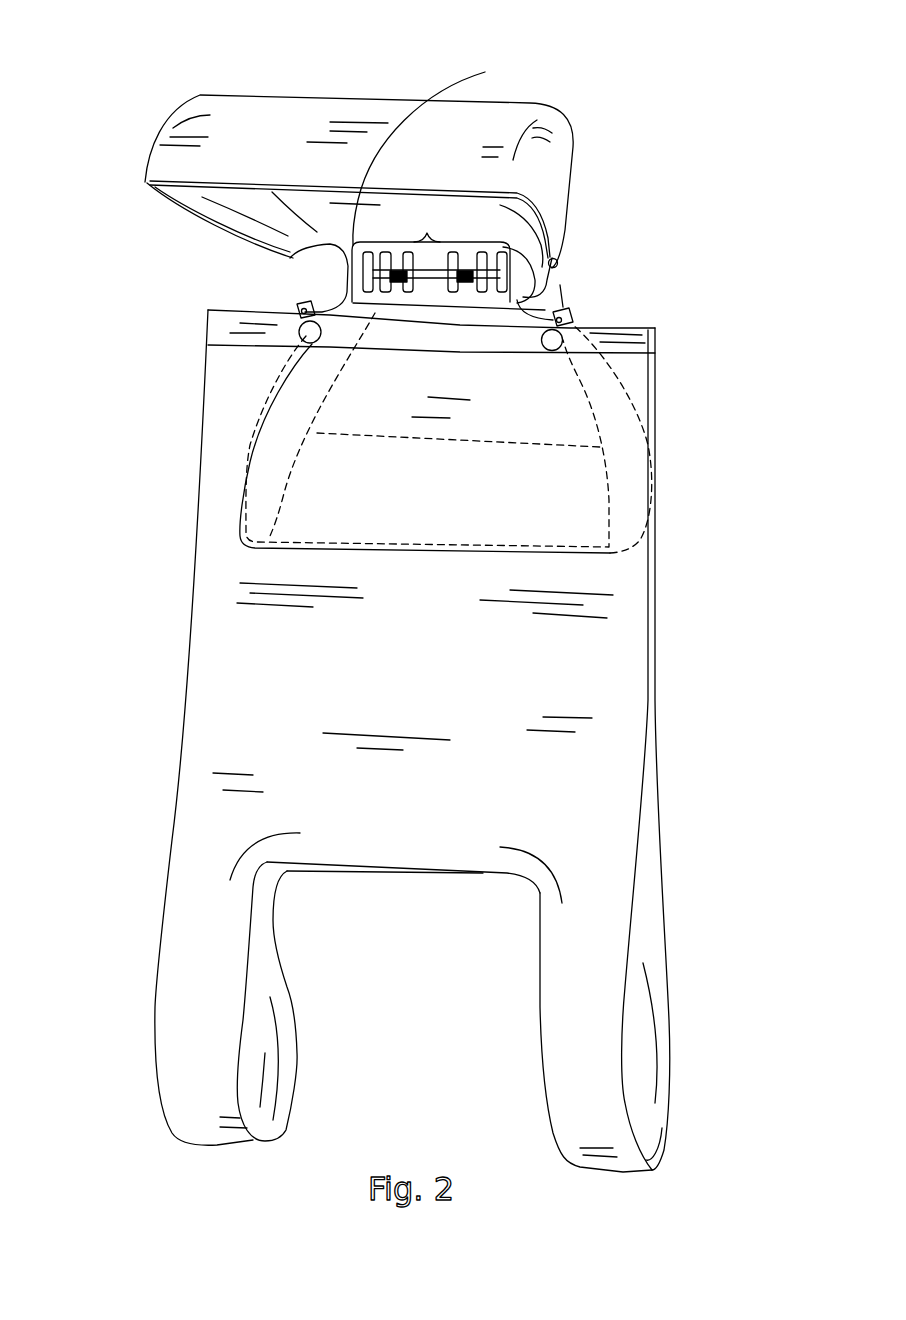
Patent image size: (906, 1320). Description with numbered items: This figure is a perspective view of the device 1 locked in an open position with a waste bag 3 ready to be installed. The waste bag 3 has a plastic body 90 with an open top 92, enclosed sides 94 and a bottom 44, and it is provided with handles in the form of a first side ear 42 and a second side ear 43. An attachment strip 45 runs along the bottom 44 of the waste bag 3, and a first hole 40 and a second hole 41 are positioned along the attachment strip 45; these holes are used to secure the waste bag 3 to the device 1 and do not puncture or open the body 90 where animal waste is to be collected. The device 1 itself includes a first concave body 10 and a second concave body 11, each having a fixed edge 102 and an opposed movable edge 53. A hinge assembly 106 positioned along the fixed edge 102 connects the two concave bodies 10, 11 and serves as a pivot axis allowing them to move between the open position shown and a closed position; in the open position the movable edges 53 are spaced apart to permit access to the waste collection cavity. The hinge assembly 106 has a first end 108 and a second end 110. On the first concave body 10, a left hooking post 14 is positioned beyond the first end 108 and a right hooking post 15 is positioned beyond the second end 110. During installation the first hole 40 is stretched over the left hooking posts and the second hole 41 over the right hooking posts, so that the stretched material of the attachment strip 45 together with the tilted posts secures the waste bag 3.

The device 1 is at (127, 110).
The waste bag 3 is at (169, 605).
The first concave body 10 is at (276, 434).
The second concave body 11 is at (255, 122).
The left hooking post 14 is at (312, 302).
The right hooking post 15 is at (560, 307).
The first hole 40 is at (314, 343).
The second hole 41 is at (553, 351).
The first side ear 42 is at (668, 1038).
The second side ear 43 is at (297, 1087).
The bottom 44 is at (208, 337).
The attachment strip 45 is at (230, 313).
The movable edge 53 is at (230, 183).
The plastic body 90 is at (487, 687).
The open top 92 is at (323, 867).
The enclosed sides 94 is at (184, 726).
The fixed edge 102 is at (685, 512).
The hinge assembly 106 is at (431, 254).
The first end 108 is at (530, 288).
The second end 110 is at (319, 278).